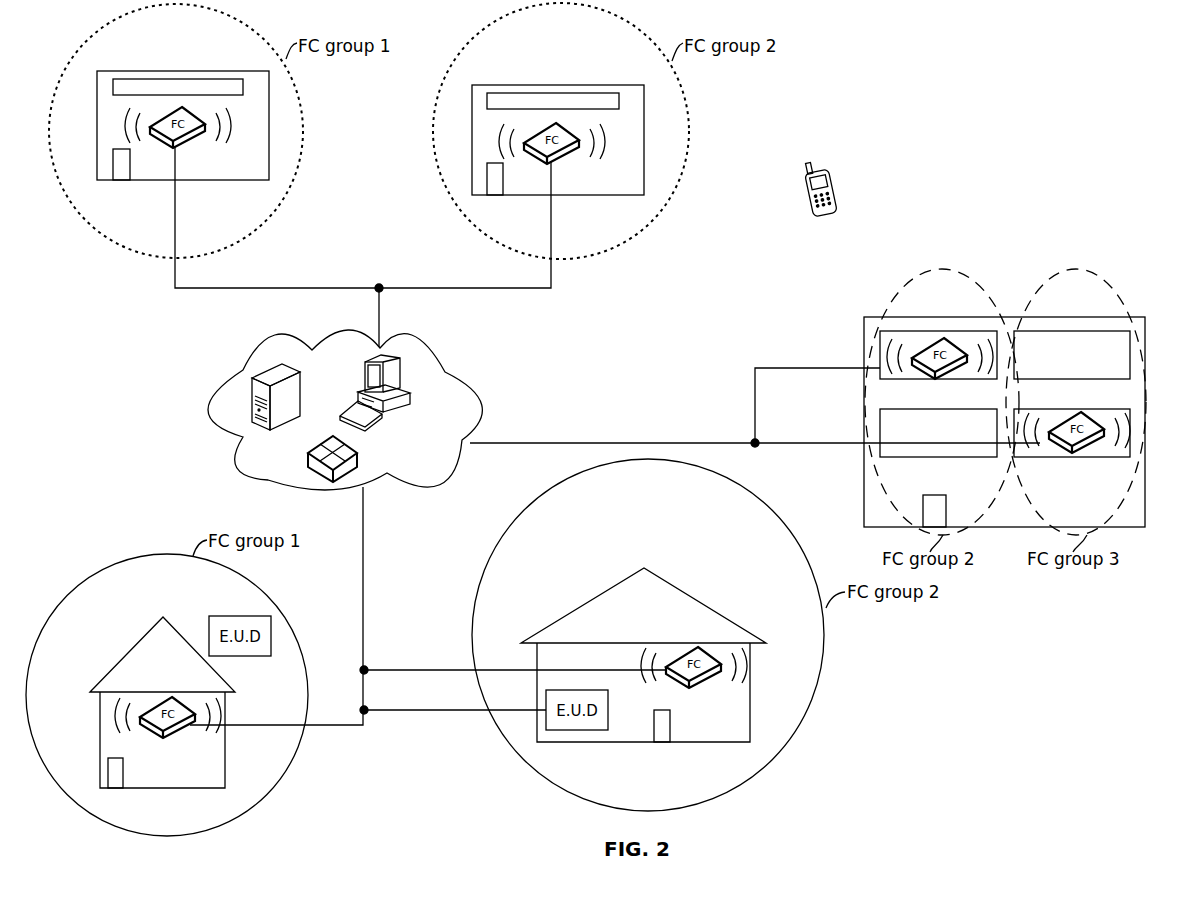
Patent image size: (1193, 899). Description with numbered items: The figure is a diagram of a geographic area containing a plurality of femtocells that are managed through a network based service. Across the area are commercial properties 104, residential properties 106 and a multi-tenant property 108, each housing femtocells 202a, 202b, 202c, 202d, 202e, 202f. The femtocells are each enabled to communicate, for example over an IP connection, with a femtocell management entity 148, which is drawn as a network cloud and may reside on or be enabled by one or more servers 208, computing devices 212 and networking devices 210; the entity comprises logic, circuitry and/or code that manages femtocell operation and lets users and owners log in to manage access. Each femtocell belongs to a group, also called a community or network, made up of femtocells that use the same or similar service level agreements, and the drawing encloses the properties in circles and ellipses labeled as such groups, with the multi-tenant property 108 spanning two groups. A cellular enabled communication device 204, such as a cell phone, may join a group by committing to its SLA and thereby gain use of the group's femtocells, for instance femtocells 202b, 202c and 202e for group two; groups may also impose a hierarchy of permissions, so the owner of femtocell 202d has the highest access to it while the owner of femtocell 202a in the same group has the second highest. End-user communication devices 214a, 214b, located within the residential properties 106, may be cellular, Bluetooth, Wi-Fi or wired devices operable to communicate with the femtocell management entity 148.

The commercial property 104 is at (130, 71).
The residential property 106 is at (133, 645).
The multi-tenant property 108 is at (1145, 348).
The femtocell management entity 148 is at (420, 342).
The femtocell 202a is at (183, 143).
The femtocell 202b is at (558, 159).
The femtocell 202c is at (170, 736).
The femtocell 202d is at (699, 683).
The femtocell 202e is at (953, 370).
The femtocell 202f is at (1090, 442).
The cellular enabled communication device 204 is at (815, 214).
The server 208 is at (302, 377).
The networking device 210 is at (357, 453).
The computing device 212 is at (410, 400).
The end-user communication device 214a is at (608, 711).
The end-user communication device 214b is at (237, 616).